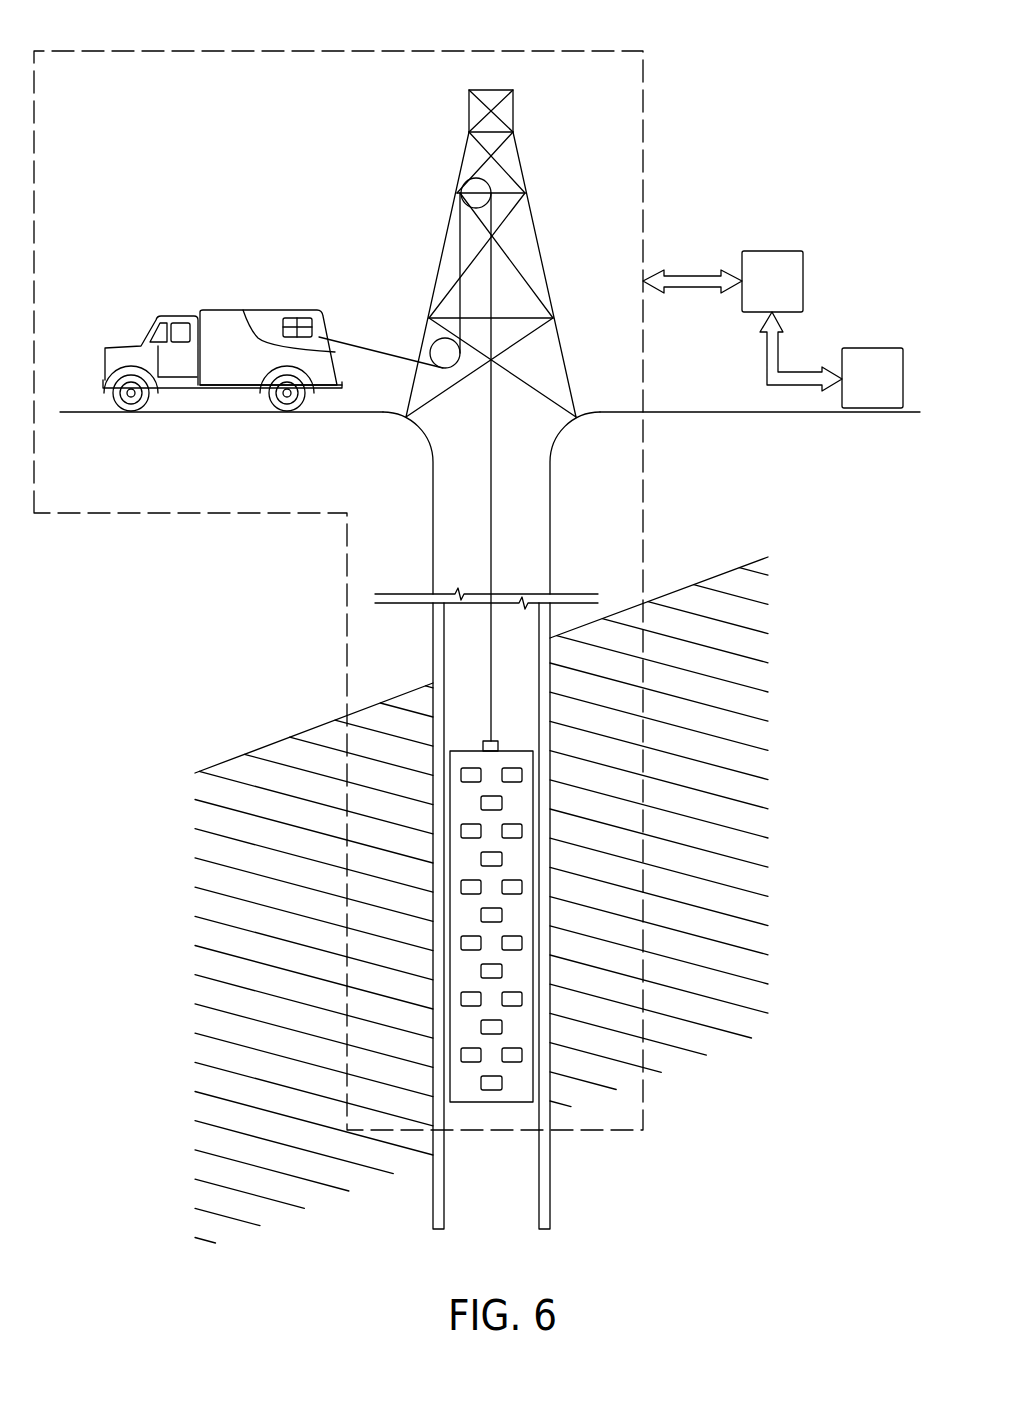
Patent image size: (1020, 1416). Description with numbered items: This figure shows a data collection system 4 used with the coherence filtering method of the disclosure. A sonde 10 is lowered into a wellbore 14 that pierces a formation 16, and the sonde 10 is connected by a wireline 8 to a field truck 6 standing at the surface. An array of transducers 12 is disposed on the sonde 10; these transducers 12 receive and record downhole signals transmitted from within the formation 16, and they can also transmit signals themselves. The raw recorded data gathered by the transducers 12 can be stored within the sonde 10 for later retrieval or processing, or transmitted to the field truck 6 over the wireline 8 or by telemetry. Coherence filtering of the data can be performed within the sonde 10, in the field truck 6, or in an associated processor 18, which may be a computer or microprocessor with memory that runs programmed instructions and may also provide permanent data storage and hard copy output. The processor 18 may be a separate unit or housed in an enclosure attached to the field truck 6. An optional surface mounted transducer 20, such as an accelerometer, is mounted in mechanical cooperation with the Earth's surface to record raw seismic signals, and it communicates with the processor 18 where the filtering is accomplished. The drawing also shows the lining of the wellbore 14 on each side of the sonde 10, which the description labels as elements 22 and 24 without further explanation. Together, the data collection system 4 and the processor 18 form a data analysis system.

The data collection system 4 is at (325, 40).
The field truck 6 is at (265, 310).
The wireline 8 is at (491, 492).
The sonde 10 is at (452, 871).
The transducers 12 is at (467, 775).
The wellbore 14 is at (478, 1182).
The formation 16 is at (705, 818).
The processor 18 is at (777, 251).
The surface mounted transducer 20 is at (885, 348).
The casing 22 is at (445, 1193).
The casing 24 is at (550, 1180).